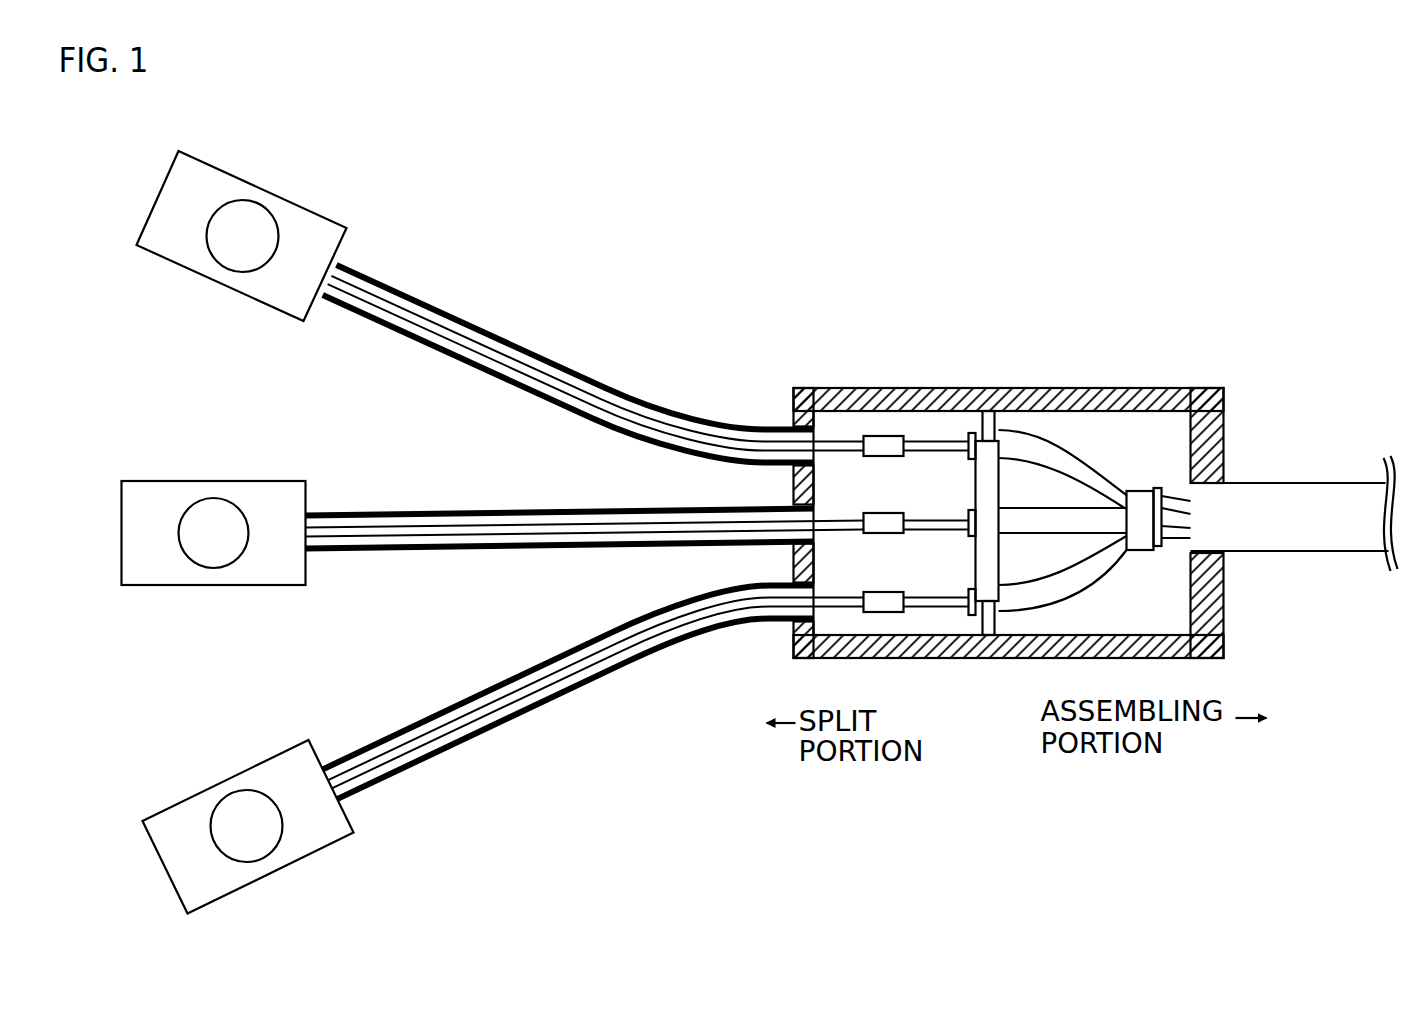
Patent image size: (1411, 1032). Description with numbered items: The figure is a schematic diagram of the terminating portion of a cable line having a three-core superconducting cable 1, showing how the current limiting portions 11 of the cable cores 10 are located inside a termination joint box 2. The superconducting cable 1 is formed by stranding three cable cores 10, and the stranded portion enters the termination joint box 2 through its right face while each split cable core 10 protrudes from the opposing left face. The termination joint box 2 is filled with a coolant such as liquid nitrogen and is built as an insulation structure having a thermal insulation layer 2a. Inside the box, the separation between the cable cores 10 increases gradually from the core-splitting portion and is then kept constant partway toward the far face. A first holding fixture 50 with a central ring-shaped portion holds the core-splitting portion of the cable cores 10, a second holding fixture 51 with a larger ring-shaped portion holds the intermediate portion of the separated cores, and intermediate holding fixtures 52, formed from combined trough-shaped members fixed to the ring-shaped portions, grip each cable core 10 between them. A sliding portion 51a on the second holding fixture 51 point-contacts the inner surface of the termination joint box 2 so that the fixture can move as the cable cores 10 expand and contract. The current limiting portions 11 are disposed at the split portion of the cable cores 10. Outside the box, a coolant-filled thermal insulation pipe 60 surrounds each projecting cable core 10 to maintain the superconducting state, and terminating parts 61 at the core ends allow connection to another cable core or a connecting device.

The superconducting cable 1 is at (1282, 485).
The termination joint box 2 is at (1039, 505).
The thermal insulation layer 2a is at (1226, 392).
The cable core 10 is at (592, 412).
The current limiting portion 11 is at (880, 437).
The first holding fixture 50 is at (1150, 492).
The second holding fixture 51 is at (1010, 485).
The sliding portion 51a is at (1003, 440).
The intermediate holding fixture 52 is at (1096, 560).
The thermal insulation pipe 60 is at (720, 588).
The terminating part 61 is at (282, 315).